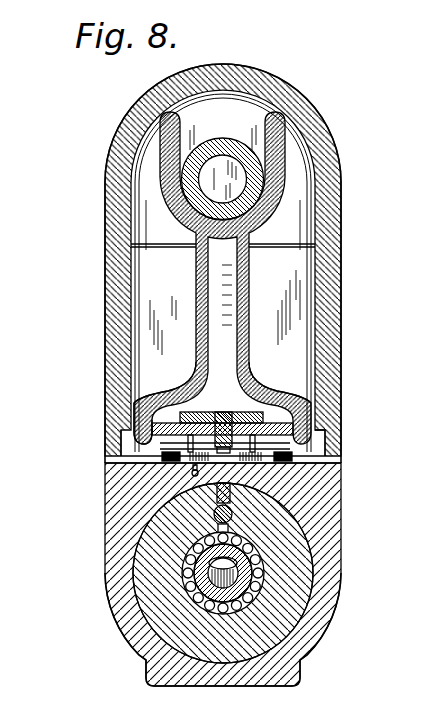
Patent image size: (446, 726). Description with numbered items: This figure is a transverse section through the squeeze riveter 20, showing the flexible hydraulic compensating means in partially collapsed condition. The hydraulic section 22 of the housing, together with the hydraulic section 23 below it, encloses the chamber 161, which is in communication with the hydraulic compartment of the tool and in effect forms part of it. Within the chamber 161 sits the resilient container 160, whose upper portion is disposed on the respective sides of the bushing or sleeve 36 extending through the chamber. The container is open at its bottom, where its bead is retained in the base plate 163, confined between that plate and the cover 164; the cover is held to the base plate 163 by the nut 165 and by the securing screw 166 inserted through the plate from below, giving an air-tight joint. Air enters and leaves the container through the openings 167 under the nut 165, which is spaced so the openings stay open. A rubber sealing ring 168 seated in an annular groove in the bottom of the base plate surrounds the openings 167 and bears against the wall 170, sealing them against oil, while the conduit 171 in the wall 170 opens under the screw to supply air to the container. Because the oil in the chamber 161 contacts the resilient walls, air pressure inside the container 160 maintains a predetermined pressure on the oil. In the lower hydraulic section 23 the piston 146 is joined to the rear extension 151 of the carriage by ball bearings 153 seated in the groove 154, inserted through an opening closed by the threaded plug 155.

The squeeze riveter 20 is at (118, 136).
The hydraulic section 22 is at (340, 182).
The bushing or sleeve 36 is at (223, 138).
The resilient container 160 is at (198, 289).
The chamber 161 is at (307, 272).
The securing screw 166 is at (133, 397).
The nut 165 is at (300, 413).
The cover 164 is at (132, 413).
The base plate 163 is at (315, 452).
The rubber sealing ring 168 is at (150, 438).
The openings 167 is at (110, 458).
The wall 170 is at (327, 484).
The hydraulic section 23 is at (333, 550).
The piston 146 is at (152, 604).
The threaded plug 155 is at (216, 514).
The conduit 171 is at (192, 475).
The rear extension 151 is at (183, 568).
The ball bearings 153 is at (263, 588).
The groove 154 is at (290, 624).